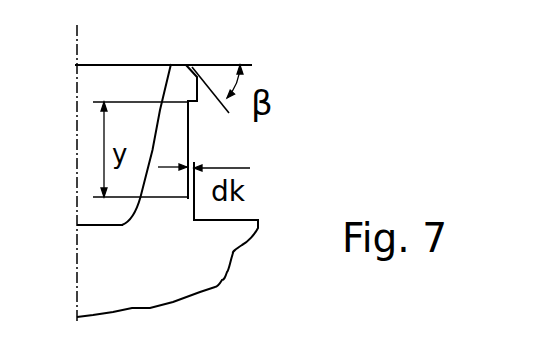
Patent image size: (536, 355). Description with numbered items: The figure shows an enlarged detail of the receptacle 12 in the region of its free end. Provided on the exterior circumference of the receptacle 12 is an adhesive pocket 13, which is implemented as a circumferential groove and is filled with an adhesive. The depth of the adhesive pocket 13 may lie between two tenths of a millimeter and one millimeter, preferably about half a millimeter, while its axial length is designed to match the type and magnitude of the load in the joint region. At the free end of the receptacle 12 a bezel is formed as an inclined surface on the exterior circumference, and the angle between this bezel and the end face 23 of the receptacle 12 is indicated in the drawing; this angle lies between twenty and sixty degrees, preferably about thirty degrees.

The receptacle 12 is at (308, 91).
The adhesive pocket 13 is at (193, 147).
The end face 23 is at (175, 64).